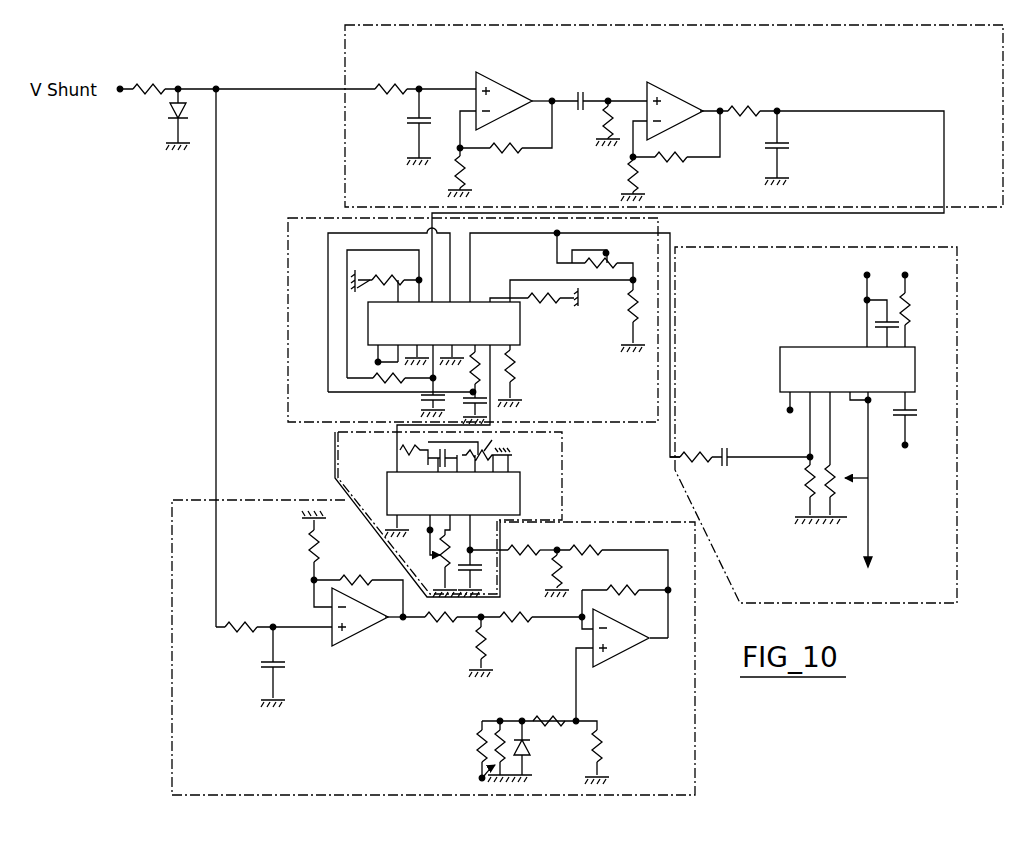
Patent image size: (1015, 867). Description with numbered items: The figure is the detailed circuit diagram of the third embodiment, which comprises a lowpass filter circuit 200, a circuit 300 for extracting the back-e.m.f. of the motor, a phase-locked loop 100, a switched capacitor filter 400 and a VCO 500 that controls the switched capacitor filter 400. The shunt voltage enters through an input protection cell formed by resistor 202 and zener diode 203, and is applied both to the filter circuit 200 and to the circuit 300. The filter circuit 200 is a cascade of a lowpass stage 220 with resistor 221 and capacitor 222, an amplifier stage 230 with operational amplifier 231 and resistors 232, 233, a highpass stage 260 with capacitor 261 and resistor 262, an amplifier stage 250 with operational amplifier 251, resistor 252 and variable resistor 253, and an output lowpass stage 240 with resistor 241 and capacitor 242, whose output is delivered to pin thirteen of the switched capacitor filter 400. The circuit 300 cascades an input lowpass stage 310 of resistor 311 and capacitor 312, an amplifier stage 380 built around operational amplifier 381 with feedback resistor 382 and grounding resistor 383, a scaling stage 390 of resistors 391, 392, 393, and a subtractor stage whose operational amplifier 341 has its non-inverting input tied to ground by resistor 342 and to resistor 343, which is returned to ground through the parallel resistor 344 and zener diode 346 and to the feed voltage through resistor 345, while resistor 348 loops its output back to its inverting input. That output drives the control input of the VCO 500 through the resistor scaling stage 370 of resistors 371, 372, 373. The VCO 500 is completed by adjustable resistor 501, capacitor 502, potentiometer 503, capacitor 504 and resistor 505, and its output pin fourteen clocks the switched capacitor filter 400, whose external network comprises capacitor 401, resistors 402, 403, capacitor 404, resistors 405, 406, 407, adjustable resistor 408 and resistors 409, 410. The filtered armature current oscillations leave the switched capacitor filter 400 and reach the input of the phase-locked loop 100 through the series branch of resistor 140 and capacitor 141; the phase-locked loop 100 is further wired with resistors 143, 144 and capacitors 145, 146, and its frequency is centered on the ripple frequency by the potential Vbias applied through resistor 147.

The phase-locked loop 100 is at (968, 276).
The lowpass filter circuit 200 is at (345, 152).
The lowpass stage 220 is at (426, 66).
The amplifier stage 230 is at (462, 76).
The lowpass stage 240 is at (792, 94).
The amplifier stage 250 is at (678, 64).
The highpass stage 260 is at (602, 66).
The circuit for extracting the back-e.m.f. of the motor 300 is at (172, 585).
The input lowpass stage 310 is at (221, 680).
The resistor scaling stage 370 is at (578, 540).
The amplifier stage 380 is at (354, 670).
The scaling stage 390 is at (452, 668).
The switched capacitor filter 400 is at (288, 272).
The VCO 500 is at (330, 470).
The resistor 202 is at (143, 77).
The zener diode 203 is at (155, 119).
The resistor 221 is at (423, 78).
The capacitor 222 is at (404, 125).
The operational amplifier 231 is at (515, 95).
The resistor 232 is at (479, 172).
The resistor 233 is at (504, 127).
The resistor 241 is at (750, 100).
The capacitor 242 is at (800, 148).
The operational amplifier 251 is at (665, 103).
The resistor 252 is at (650, 179).
The variable resistor 253 is at (675, 136).
The capacitor 261 is at (583, 87).
The resistor 262 is at (588, 122).
The capacitor 401 is at (410, 383).
The resistor 402 is at (355, 385).
The resistor 403 is at (482, 368).
The capacitor 404 is at (485, 407).
The resistor 405 is at (529, 376).
The resistor 406 is at (532, 315).
The resistor 407 is at (609, 316).
The adjustable resistor 408 is at (602, 256).
The resistor 409 is at (384, 314).
The resistor 410 is at (348, 284).
The adjustable resistor 501 is at (426, 556).
The capacitor 502 is at (481, 568).
The potentiometer 503 is at (491, 452).
The capacitor 504 is at (424, 464).
The resistor 505 is at (387, 451).
The resistor 371 is at (532, 538).
The resistor 372 is at (612, 580).
The resistor 373 is at (575, 573).
The resistor 311 is at (274, 612).
The capacitor 312 is at (256, 667).
The operational amplifier 381 is at (369, 626).
The resistor 382 is at (357, 584).
The resistor 383 is at (294, 545).
The resistor 391 is at (443, 630).
The resistor 392 is at (533, 605).
The resistor 393 is at (499, 647).
The operational amplifier 341 is at (620, 657).
The resistor 342 is at (615, 757).
The resistor 343 is at (543, 709).
The resistor 344 is at (486, 780).
The resistor 345 is at (458, 751).
The zener diode 346 is at (545, 746).
The resistor 348 is at (626, 578).
The resistor 140 is at (699, 443).
The capacitor 141 is at (756, 472).
The resistor 143 is at (790, 453).
The resistor 144 is at (869, 480).
The capacitor 145 is at (923, 420).
The capacitor 146 is at (878, 316).
The resistor 147 is at (927, 309).